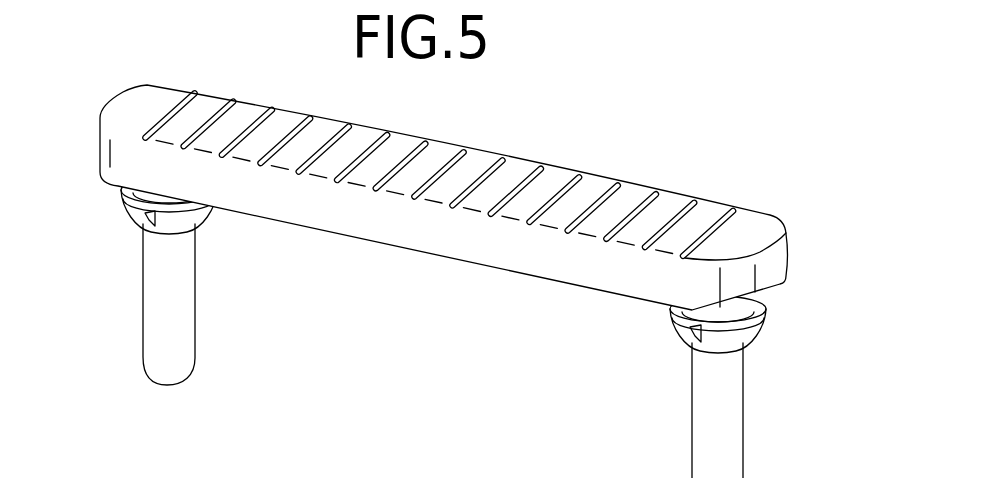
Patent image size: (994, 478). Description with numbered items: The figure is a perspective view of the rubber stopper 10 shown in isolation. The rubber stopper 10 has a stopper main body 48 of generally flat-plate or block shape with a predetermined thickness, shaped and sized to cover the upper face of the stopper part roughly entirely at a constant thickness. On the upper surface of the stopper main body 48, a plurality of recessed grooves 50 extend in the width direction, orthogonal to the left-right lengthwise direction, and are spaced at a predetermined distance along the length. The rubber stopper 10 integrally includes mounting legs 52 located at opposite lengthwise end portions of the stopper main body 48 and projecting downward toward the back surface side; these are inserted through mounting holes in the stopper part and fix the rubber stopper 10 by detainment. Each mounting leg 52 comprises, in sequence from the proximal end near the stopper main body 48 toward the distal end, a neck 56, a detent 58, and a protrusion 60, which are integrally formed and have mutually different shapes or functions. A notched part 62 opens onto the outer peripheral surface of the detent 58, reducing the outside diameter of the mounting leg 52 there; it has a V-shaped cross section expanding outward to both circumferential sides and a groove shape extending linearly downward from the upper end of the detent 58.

The rubber stopper 10 is at (753, 122).
The stopper main body 48 is at (468, 245).
The recessed grooves 50 is at (339, 138).
The mounting leg 52 is at (128, 307).
The neck 56 is at (112, 184).
The detent 58 is at (188, 226).
The protrusion 60 is at (182, 328).
The notched part 62 is at (143, 213).